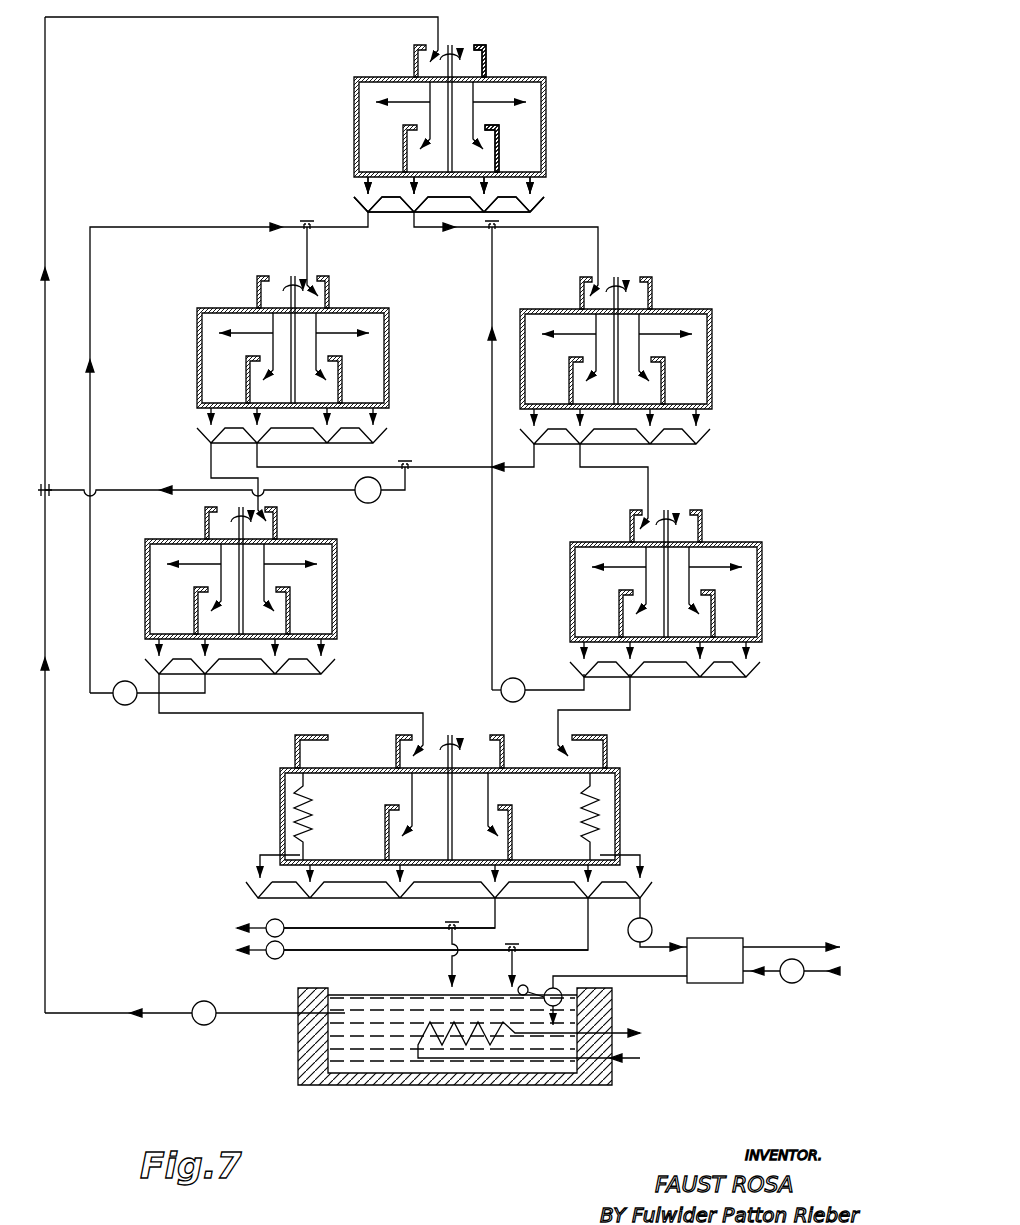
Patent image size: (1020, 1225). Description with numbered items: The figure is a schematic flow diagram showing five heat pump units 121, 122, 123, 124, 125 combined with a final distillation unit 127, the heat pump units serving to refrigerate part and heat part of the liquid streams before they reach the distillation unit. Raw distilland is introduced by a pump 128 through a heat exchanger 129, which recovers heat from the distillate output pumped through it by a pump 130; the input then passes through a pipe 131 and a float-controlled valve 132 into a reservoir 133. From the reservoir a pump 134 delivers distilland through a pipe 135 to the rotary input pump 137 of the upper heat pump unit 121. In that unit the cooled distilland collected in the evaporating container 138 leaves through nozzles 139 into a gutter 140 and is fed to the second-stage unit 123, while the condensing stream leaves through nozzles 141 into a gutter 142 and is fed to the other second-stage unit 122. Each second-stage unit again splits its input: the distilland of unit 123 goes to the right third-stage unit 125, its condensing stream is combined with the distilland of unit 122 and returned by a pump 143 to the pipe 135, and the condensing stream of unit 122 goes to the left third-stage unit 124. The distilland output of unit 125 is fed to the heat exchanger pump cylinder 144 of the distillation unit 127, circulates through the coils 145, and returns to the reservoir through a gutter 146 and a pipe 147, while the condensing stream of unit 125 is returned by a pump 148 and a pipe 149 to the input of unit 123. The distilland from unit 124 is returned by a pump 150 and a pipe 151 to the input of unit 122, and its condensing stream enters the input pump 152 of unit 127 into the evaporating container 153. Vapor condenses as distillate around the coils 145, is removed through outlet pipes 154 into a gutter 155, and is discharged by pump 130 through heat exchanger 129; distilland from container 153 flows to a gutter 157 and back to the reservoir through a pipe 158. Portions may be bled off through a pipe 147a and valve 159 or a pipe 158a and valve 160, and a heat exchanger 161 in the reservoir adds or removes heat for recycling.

The upper heat pump unit 121 is at (562, 120).
The second-stage heat pump unit 122 is at (388, 345).
The second-stage heat pump unit 123 is at (721, 347).
The third-stage heat pump unit 124 is at (345, 587).
The third-stage heat pump unit 125 is at (771, 587).
The final distillation unit 127 is at (471, 805).
The pump 128 is at (797, 982).
The heat exchanger 129 is at (763, 960).
The pump 130 is at (653, 925).
The pipe 131 is at (638, 978).
The float-controlled valve 132 is at (558, 989).
The reservoir 133 is at (541, 1088).
The pump 134 is at (206, 1025).
The pipe 135 is at (46, 954).
The rotary input pump 137 is at (492, 60).
The evaporating container 138 is at (490, 140).
The nozzles 139 is at (432, 200).
The gutter 140 is at (500, 208).
The nozzles 141 is at (360, 185).
The gutter 142 is at (360, 200).
The pump 143 is at (370, 503).
The heat exchanger pump cylinder 144 is at (608, 750).
The heat exchanger coils 145 is at (280, 804).
The gutter 146 is at (321, 886).
The pipe 147 is at (514, 957).
The pipe 147a is at (345, 949).
The pump 148 is at (512, 677).
The pipe 149 is at (499, 518).
The pump 150 is at (115, 705).
The pipe 151 is at (90, 604).
The input pump 152 is at (388, 742).
The evaporating container 153 is at (514, 829).
The outlet pipes 154 is at (257, 846).
The gutter 155 is at (244, 885).
The gutter 157 is at (414, 886).
The pipe 158 is at (435, 968).
The pipe 158a is at (358, 926).
The valve 159 is at (286, 947).
The valve 160 is at (286, 924).
The heat exchanger 161 is at (438, 1063).